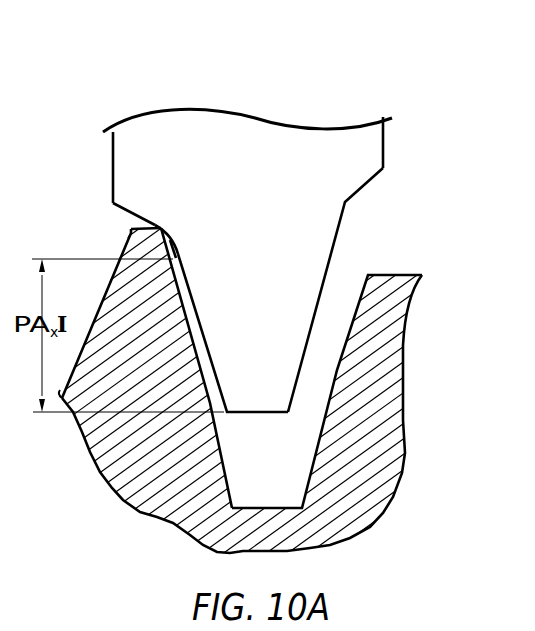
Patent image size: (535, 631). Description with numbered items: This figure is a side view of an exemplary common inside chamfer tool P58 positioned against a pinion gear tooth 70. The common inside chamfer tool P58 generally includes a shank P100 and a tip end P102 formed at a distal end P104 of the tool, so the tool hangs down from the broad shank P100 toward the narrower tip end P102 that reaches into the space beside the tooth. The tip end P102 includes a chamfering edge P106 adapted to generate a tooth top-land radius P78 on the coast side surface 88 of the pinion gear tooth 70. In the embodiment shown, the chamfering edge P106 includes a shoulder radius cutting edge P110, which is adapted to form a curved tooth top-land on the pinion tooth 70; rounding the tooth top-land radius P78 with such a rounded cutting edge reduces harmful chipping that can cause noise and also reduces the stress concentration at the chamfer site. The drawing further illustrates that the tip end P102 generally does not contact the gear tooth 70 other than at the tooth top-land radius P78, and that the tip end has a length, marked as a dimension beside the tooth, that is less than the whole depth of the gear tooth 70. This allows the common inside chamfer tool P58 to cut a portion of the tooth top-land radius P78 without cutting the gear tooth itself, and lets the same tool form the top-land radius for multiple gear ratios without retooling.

The common inside chamfer tool P58 is at (266, 212).
The shank P100 is at (388, 132).
The distal end P104 is at (390, 168).
The chamfering edge P106 is at (172, 222).
The shoulder radius cutting edge P110 is at (178, 238).
The tooth top-land radius P78 is at (159, 246).
The tip end P102 is at (316, 340).
The coast side surface 88 is at (202, 360).
The pinion tooth 70 is at (267, 391).